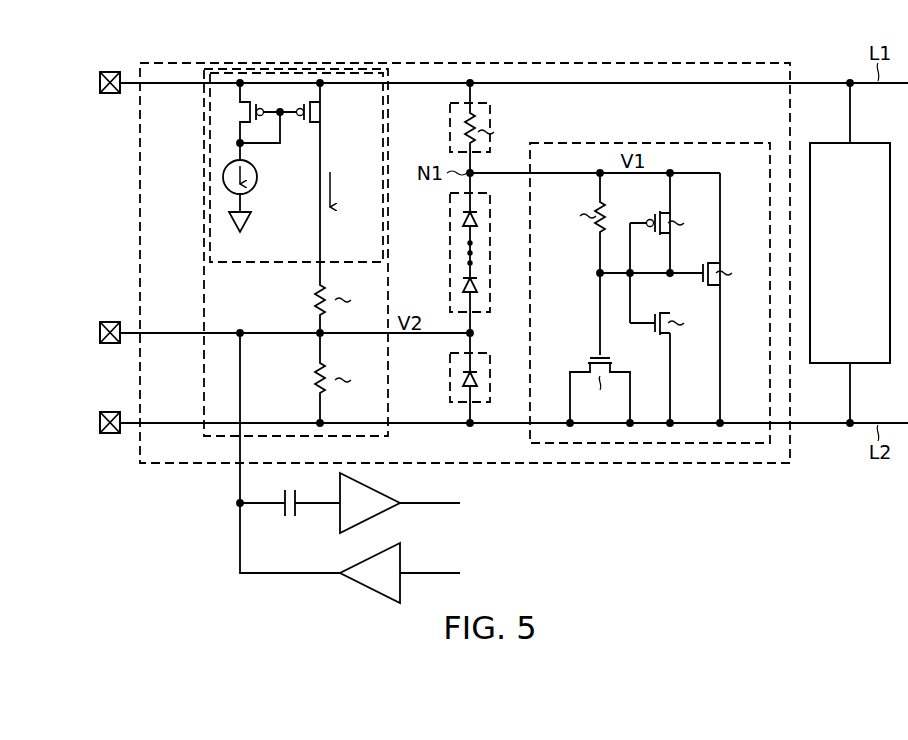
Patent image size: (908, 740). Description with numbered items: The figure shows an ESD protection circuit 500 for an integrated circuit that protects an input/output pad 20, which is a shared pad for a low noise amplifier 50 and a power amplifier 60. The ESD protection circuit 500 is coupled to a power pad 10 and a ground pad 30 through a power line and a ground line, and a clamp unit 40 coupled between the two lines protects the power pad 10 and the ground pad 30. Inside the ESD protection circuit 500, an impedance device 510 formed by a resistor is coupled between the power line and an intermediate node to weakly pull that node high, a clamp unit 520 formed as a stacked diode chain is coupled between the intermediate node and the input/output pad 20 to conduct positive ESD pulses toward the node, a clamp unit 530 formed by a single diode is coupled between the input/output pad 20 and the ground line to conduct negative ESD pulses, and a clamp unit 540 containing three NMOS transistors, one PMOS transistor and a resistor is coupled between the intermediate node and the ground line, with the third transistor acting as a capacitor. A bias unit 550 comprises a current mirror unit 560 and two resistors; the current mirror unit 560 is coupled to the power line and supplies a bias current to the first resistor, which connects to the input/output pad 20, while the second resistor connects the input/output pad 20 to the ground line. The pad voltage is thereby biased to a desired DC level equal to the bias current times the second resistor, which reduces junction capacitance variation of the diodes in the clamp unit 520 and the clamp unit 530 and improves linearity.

The power pad 10 is at (110, 69).
The I/O pad 20 is at (110, 319).
The ground pad 30 is at (110, 409).
The clamp unit 40 is at (850, 253).
The low noise amplifier 50 is at (368, 490).
The power amplifier 60 is at (372, 557).
The ESD protection circuit 500 is at (465, 62).
The impedance device 510 is at (446, 128).
The clamp unit 520 is at (446, 253).
The clamp unit 530 is at (446, 378).
The clamp unit 540 is at (650, 142).
The bias unit 550 is at (297, 68).
The current mirror unit 560 is at (209, 170).